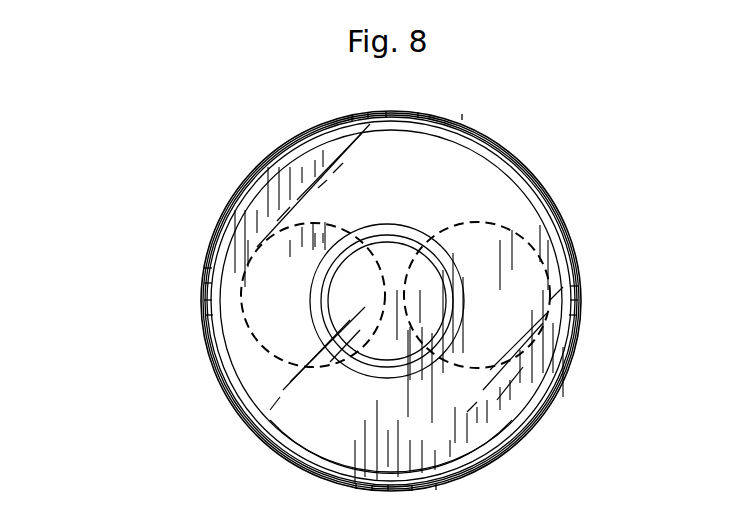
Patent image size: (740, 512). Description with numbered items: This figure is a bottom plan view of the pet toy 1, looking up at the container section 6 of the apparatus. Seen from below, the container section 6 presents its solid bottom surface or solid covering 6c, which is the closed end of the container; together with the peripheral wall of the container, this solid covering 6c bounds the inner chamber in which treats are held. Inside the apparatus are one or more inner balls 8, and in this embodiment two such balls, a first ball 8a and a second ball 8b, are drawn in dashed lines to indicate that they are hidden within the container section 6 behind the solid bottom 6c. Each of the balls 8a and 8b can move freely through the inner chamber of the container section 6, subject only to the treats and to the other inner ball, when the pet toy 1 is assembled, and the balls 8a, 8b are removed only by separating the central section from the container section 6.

The pet toy 1 is at (549, 163).
The container section 6 is at (257, 343).
The solid bottom surface 6c is at (327, 430).
The inner balls 8 is at (285, 296).
The ball 8a is at (303, 279).
The ball 8b is at (495, 296).